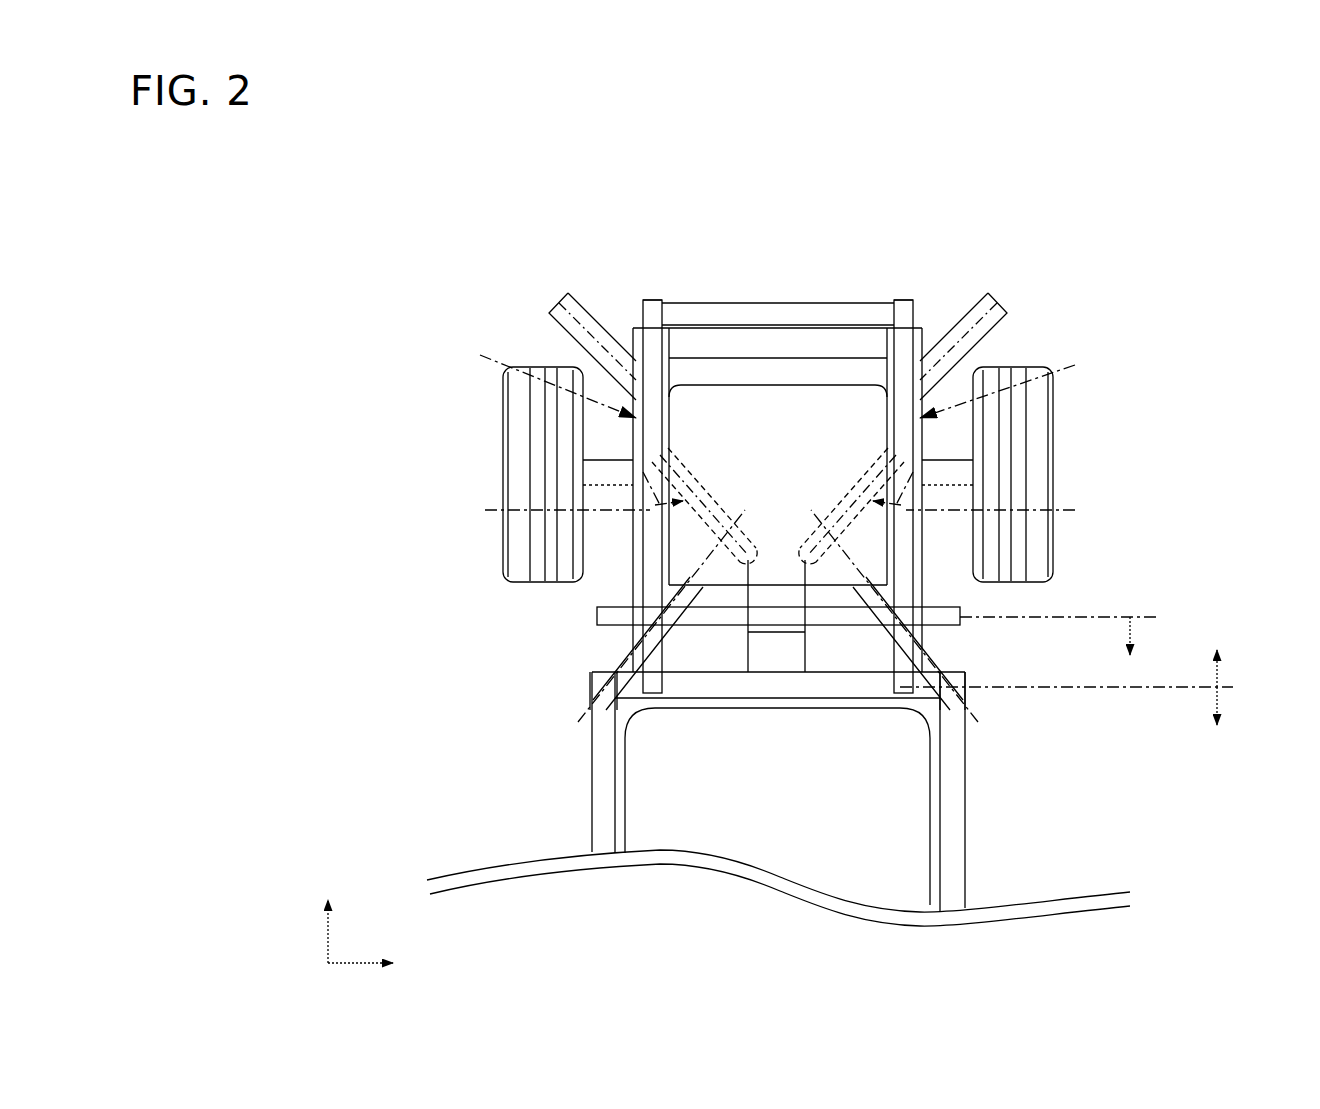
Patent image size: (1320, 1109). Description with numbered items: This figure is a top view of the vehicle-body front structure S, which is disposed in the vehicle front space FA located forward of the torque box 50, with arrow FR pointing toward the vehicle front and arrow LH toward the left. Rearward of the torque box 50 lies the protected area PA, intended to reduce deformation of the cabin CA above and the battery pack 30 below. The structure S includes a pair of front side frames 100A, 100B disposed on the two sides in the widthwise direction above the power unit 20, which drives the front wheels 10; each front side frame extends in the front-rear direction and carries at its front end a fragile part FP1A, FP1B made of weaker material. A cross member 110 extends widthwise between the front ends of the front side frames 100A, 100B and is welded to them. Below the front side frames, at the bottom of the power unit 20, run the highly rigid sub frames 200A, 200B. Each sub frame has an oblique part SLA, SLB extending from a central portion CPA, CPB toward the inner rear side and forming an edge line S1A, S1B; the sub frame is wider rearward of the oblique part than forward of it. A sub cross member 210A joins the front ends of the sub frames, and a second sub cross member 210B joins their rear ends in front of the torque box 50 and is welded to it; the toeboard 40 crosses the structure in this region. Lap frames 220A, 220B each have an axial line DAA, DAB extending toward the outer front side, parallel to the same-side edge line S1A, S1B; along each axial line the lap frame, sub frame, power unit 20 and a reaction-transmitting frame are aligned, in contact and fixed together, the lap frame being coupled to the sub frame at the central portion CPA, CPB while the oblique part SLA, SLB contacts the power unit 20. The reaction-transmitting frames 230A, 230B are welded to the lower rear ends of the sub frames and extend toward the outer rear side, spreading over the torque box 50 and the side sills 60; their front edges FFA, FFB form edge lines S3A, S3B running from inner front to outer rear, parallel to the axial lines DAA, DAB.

The cross member 110 is at (815, 313).
The front side frame 100A is at (636, 345).
The front side frame 100B is at (921, 330).
The fragile part FP1A is at (653, 312).
The fragile part FP1B is at (903, 312).
The sub cross member 210A is at (737, 343).
The power unit 20 is at (773, 440).
The torque box 50 is at (788, 687).
The lap frame 220A is at (545, 322).
The lap frame 220B is at (1011, 322).
The axial line DAA is at (538, 277).
The axial line DAB is at (1015, 289).
The edge line S1A is at (526, 413).
The edge line S1B is at (1038, 416).
The front wheels 10 is at (520, 422).
The central portion CPA is at (625, 472).
The central portion CPB is at (931, 472).
The oblique part SLA is at (514, 515).
The oblique part SLB is at (1053, 513).
The sub frame 200A is at (700, 598).
The sub frame 200B is at (855, 598).
The edge line S3A is at (567, 718).
The edge line S3B is at (1060, 760).
The front edge FFA is at (605, 652).
The front edge FFB is at (950, 648).
The toeboard 40 is at (597, 615).
The cabin CA is at (1066, 652).
The vehicle front space FA is at (1222, 649).
The protected area PA is at (1221, 723).
The side sills 60 is at (603, 803).
The reaction-transmitting frame 230A is at (717, 660).
The reaction-transmitting frame 230B is at (853, 660).
The sub cross member 210B is at (800, 660).
The battery pack 30 is at (668, 805).
The vehicle-body front structure S is at (1225, 165).
The arrow FR is at (330, 912).
The arrow LH is at (388, 960).